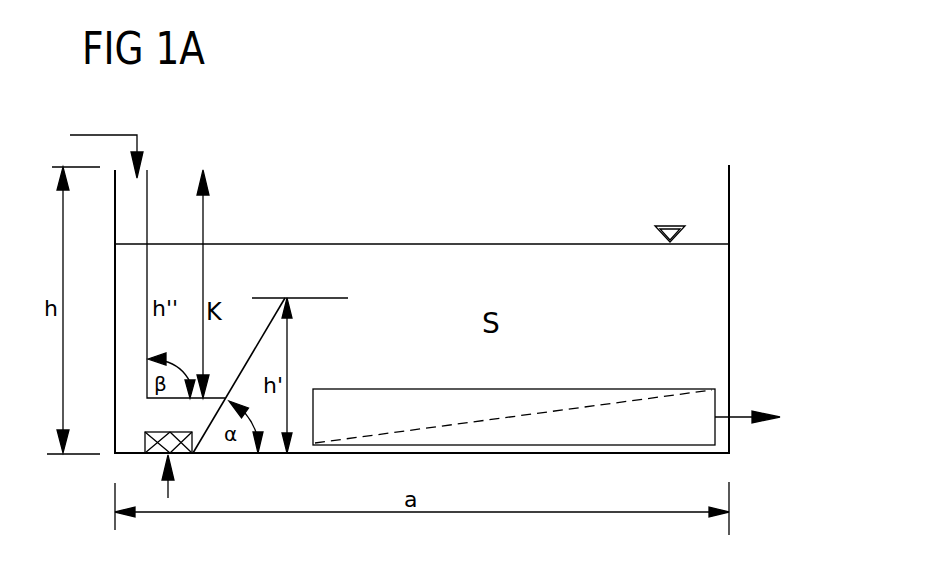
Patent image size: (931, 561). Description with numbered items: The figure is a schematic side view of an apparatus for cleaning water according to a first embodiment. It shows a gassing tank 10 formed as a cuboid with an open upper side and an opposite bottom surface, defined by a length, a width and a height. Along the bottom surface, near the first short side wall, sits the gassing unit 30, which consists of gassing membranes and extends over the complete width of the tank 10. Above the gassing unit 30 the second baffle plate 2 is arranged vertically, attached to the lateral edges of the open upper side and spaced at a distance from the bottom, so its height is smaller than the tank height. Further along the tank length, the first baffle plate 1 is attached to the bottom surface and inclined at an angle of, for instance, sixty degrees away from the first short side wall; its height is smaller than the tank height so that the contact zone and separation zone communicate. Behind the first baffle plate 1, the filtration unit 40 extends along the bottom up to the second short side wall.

The first baffle plate 1 is at (273, 342).
The second baffle plate 2 is at (150, 207).
The gassing tank 10 is at (730, 202).
The gassing unit 30 is at (140, 452).
The filtration unit 40 is at (692, 428).